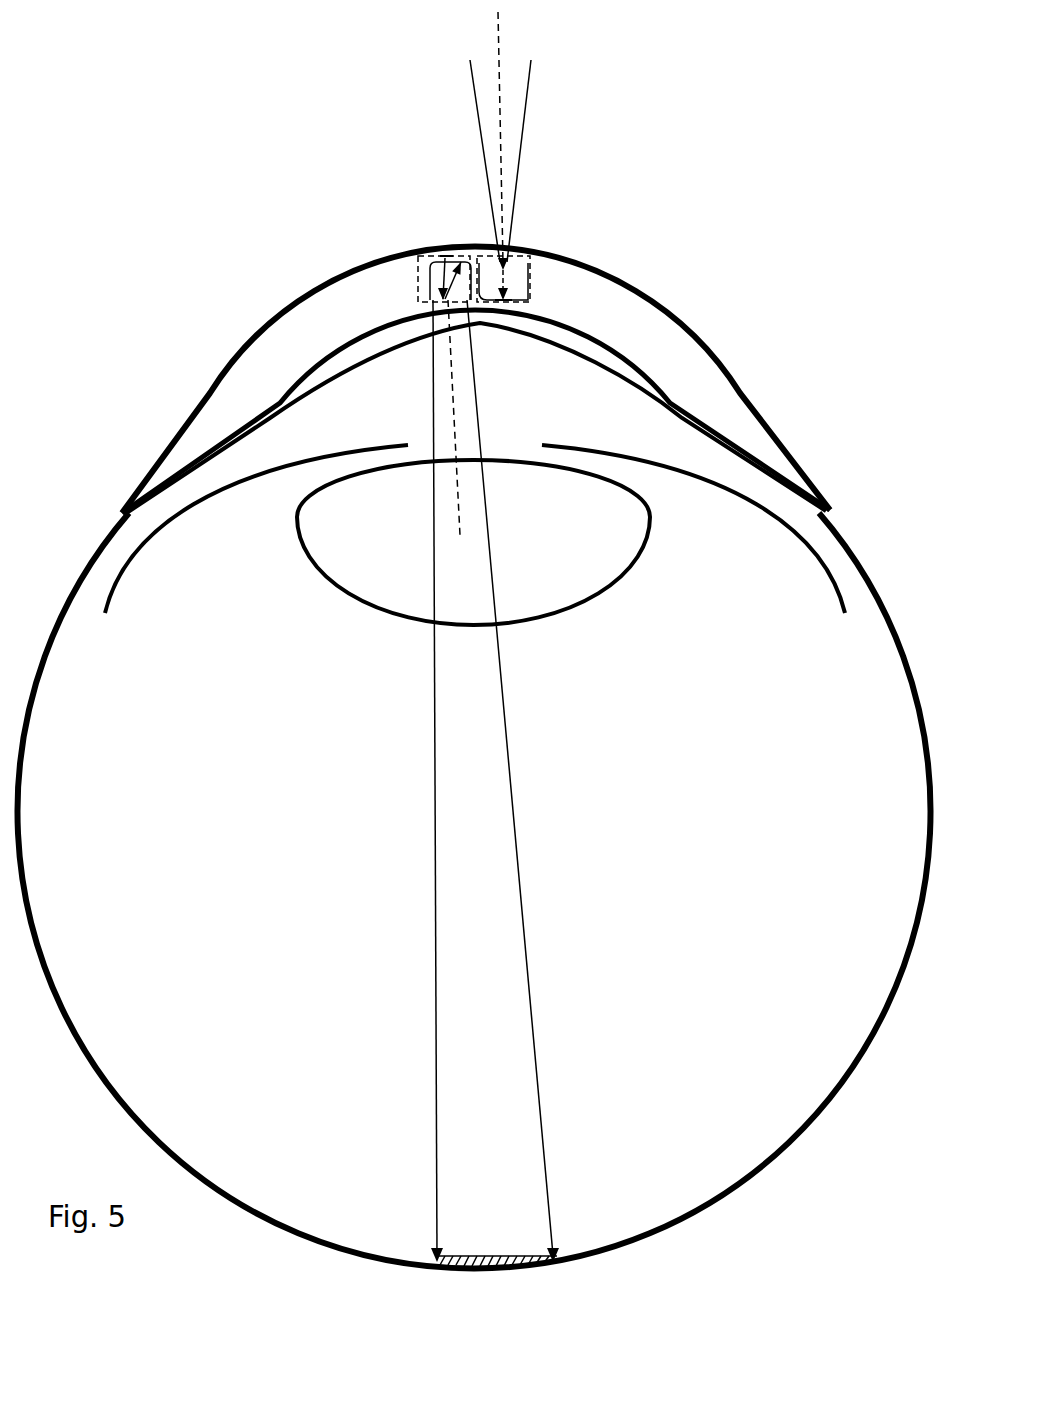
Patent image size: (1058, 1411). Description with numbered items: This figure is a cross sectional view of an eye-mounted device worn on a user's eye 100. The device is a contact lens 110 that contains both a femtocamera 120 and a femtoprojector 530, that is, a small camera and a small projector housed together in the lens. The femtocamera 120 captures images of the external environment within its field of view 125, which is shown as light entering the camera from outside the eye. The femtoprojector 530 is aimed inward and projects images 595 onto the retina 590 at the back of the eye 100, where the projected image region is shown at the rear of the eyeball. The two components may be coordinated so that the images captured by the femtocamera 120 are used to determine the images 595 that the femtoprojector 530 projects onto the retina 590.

The eye 100 is at (474, 795).
The contact lens 110 is at (476, 380).
The femtocamera 120 is at (540, 255).
The field of view 125 is at (505, 137).
The femtoprojector 530 is at (418, 256).
The retina 590 is at (205, 1182).
The images 595 is at (523, 1258).